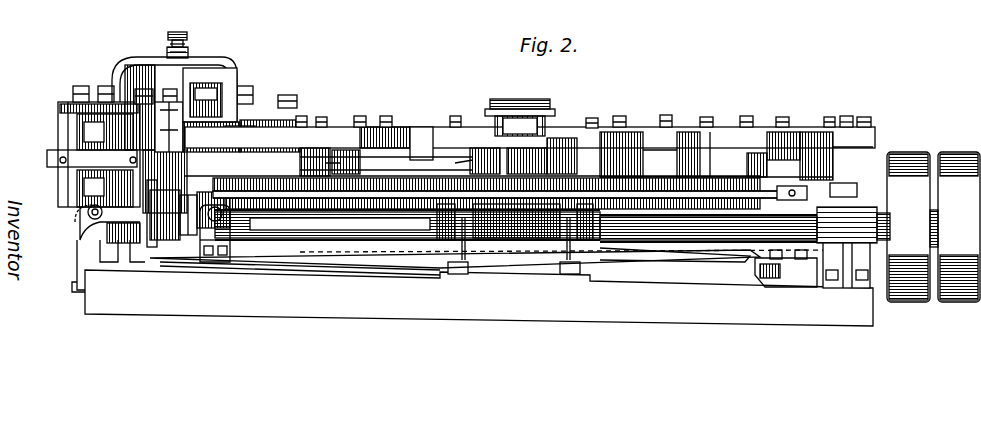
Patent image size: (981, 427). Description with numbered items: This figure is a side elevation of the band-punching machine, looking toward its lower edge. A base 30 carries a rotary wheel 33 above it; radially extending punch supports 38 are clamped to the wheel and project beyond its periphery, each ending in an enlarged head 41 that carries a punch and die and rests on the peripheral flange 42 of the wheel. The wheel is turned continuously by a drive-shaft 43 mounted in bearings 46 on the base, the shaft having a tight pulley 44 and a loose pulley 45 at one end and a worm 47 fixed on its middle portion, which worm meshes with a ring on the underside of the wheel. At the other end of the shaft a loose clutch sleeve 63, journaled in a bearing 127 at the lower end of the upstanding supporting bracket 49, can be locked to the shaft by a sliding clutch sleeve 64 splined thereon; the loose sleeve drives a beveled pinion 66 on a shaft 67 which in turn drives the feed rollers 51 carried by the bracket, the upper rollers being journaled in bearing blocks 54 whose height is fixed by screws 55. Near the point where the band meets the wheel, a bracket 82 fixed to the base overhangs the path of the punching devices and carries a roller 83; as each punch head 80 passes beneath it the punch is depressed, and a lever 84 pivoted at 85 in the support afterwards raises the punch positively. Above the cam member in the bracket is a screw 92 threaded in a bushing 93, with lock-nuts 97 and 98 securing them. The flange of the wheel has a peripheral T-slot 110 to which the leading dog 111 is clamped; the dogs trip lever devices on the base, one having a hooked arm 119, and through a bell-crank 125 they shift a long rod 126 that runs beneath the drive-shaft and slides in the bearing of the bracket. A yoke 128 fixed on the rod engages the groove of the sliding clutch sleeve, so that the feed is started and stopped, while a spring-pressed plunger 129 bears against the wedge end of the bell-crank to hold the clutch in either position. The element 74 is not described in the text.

The base 30 is at (627, 318).
The rotary wheel 33 is at (443, 150).
The punch supports 38 is at (397, 125).
The enlarged head 41 is at (407, 150).
The peripheral flange 42 is at (400, 175).
The drive-shaft 43 is at (720, 220).
The tight pulley 44 is at (903, 306).
The loose pulley 45 is at (958, 306).
The bearings 46 is at (542, 257).
The worm 47 is at (510, 247).
The supporting bracket 49 is at (66, 136).
The feed rollers 51 is at (77, 112).
The bearing blocks 54 is at (58, 122).
The screws 55 is at (103, 86).
The clutch sleeve 63 is at (183, 232).
The clutch sleeve 64 is at (207, 127).
The beveled pinion 66 is at (88, 213).
The shaft 67 is at (87, 207).
The bar 74 is at (415, 161).
The punch head 80 is at (317, 125).
The bracket 82 is at (197, 73).
The roller 83 is at (237, 82).
The lever 84 is at (678, 127).
The pivot 85 is at (848, 140).
The screw 92 is at (198, 27).
The bushing 93 is at (190, 55).
The lock-nut 97 is at (186, 48).
The lock-nut 98 is at (168, 57).
The peripheral undercut T-slot 110 is at (417, 185).
The leading dog 111 is at (780, 205).
The arm 119 is at (855, 187).
The bell-crank 125 is at (803, 267).
The rod 126 is at (304, 250).
The bearing 127 is at (153, 242).
The yoke 128 is at (216, 267).
The plunger 129 is at (823, 290).